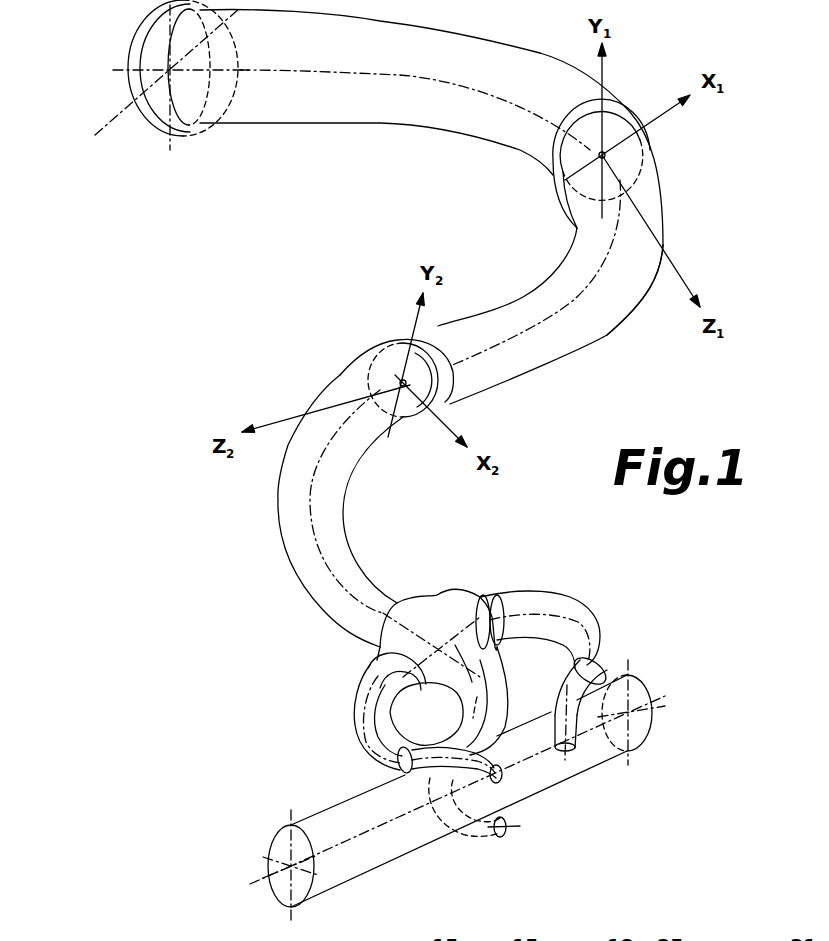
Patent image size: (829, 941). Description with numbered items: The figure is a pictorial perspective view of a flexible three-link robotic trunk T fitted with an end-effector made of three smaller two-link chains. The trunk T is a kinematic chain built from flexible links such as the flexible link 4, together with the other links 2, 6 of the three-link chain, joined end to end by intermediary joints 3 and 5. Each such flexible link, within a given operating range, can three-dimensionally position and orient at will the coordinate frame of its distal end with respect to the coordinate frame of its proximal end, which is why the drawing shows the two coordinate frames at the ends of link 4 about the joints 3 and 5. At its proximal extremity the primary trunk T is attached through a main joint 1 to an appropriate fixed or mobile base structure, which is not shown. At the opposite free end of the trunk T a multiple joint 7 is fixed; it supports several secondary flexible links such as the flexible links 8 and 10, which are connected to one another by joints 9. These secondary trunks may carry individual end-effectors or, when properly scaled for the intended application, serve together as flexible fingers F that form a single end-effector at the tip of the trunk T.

The main joint 1 is at (178, 138).
The first straight tube segment 2 is at (352, 115).
The intermediary joint 3 is at (565, 180).
The flexible link 4 is at (558, 272).
The intermediary joint 5 is at (403, 343).
The second curved tube segment 6 is at (338, 513).
The multiple joint 7 is at (468, 590).
The flexible link 8 is at (570, 590).
The joint 9 is at (597, 668).
The flexible link 10 is at (578, 737).
The flexible fingers F is at (356, 718).
The primary robotic trunk T is at (665, 190).